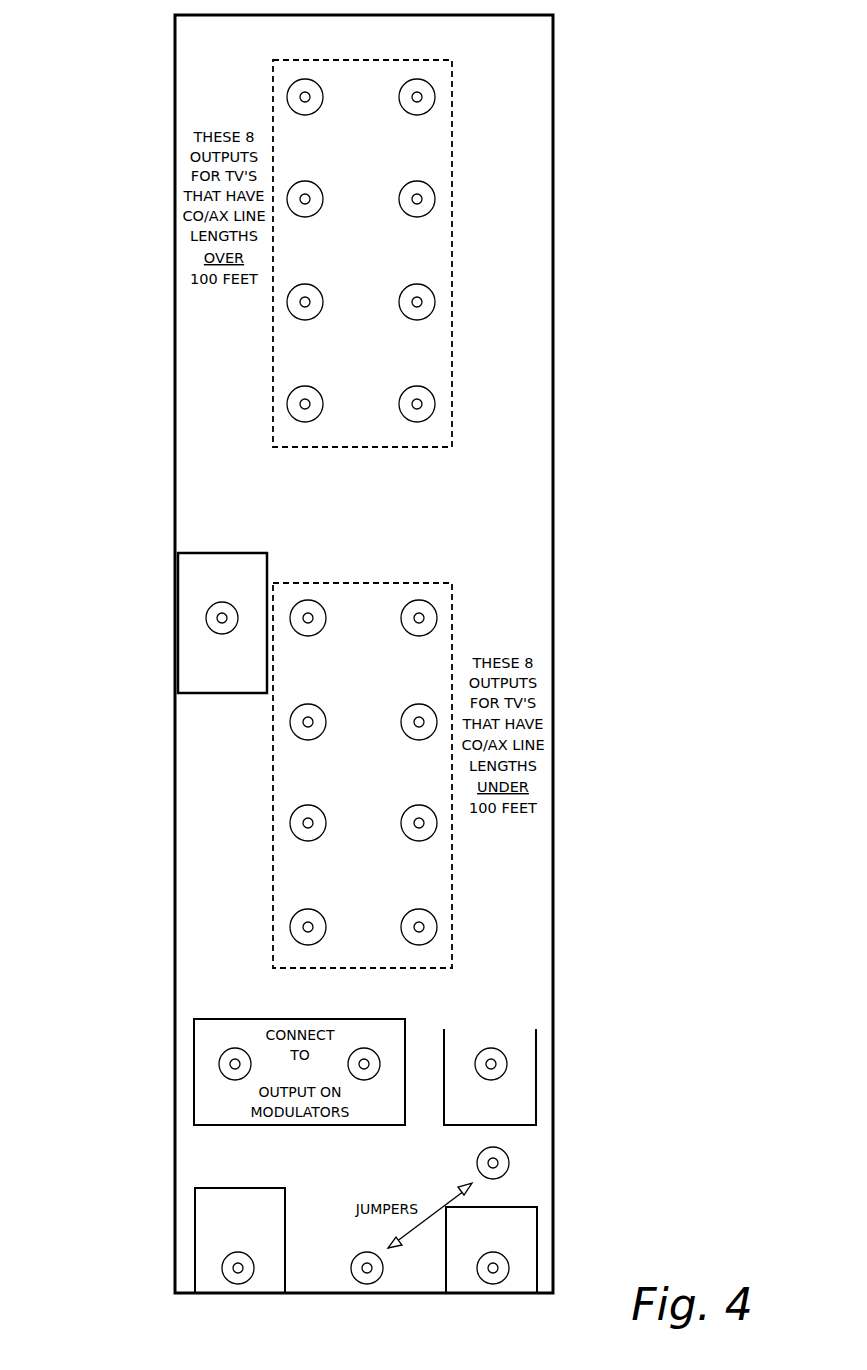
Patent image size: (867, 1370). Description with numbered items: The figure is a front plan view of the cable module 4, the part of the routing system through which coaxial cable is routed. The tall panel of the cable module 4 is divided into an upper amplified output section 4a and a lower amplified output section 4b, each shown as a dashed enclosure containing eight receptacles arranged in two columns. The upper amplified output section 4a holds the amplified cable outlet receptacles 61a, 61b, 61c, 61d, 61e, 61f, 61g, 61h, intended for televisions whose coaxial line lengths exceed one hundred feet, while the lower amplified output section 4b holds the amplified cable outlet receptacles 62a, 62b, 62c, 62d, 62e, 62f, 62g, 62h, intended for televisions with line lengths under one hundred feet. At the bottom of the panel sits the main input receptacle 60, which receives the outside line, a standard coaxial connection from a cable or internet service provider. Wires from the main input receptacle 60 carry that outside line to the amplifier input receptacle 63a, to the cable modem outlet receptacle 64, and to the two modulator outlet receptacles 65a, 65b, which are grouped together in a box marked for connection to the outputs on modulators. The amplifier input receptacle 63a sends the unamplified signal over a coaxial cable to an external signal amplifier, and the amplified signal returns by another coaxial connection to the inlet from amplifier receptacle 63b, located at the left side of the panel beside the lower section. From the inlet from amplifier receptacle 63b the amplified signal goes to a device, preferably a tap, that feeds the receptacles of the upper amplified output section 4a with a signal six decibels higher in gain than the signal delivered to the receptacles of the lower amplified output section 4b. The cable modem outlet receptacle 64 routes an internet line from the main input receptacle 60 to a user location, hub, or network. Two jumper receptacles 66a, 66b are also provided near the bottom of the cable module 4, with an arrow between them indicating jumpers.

The cable module 4 is at (150, 128).
The upper amplified output section 4a is at (372, 60).
The lower amplified output section 4b is at (393, 583).
The amplified cable outlet receptacle 61a is at (292, 86).
The amplified cable outlet receptacle 61b is at (430, 86).
The amplified cable outlet receptacle 61c is at (303, 181).
The amplified cable outlet receptacle 61d is at (430, 189).
The amplified cable outlet receptacle 61e is at (292, 313).
The amplified cable outlet receptacle 61f is at (430, 313).
The amplified cable outlet receptacle 61g is at (292, 415).
The amplified cable outlet receptacle 61h is at (430, 415).
The amplified cable outlet receptacle 62a is at (309, 600).
The amplified cable outlet receptacle 62b is at (420, 600).
The amplified cable outlet receptacle 62c is at (295, 733).
The amplified cable outlet receptacle 62d is at (421, 704).
The amplified cable outlet receptacle 62e is at (295, 835).
The amplified cable outlet receptacle 62f is at (432, 835).
The amplified cable outlet receptacle 62g is at (432, 939).
The amplified cable outlet receptacle 62h is at (295, 939).
The amplifier input receptacle 63a is at (507, 1064).
The inlet from amplifier receptacle 63b is at (205, 618).
The cable modem outlet receptacle 64 is at (235, 1284).
The modulator outlet receptacle 65a is at (232, 1049).
The modulator outlet receptacle 65b is at (364, 1049).
The jumper receptacle 66a is at (360, 1254).
The jumper receptacle 66b is at (478, 1159).
The main input receptacle 60 is at (491, 1284).